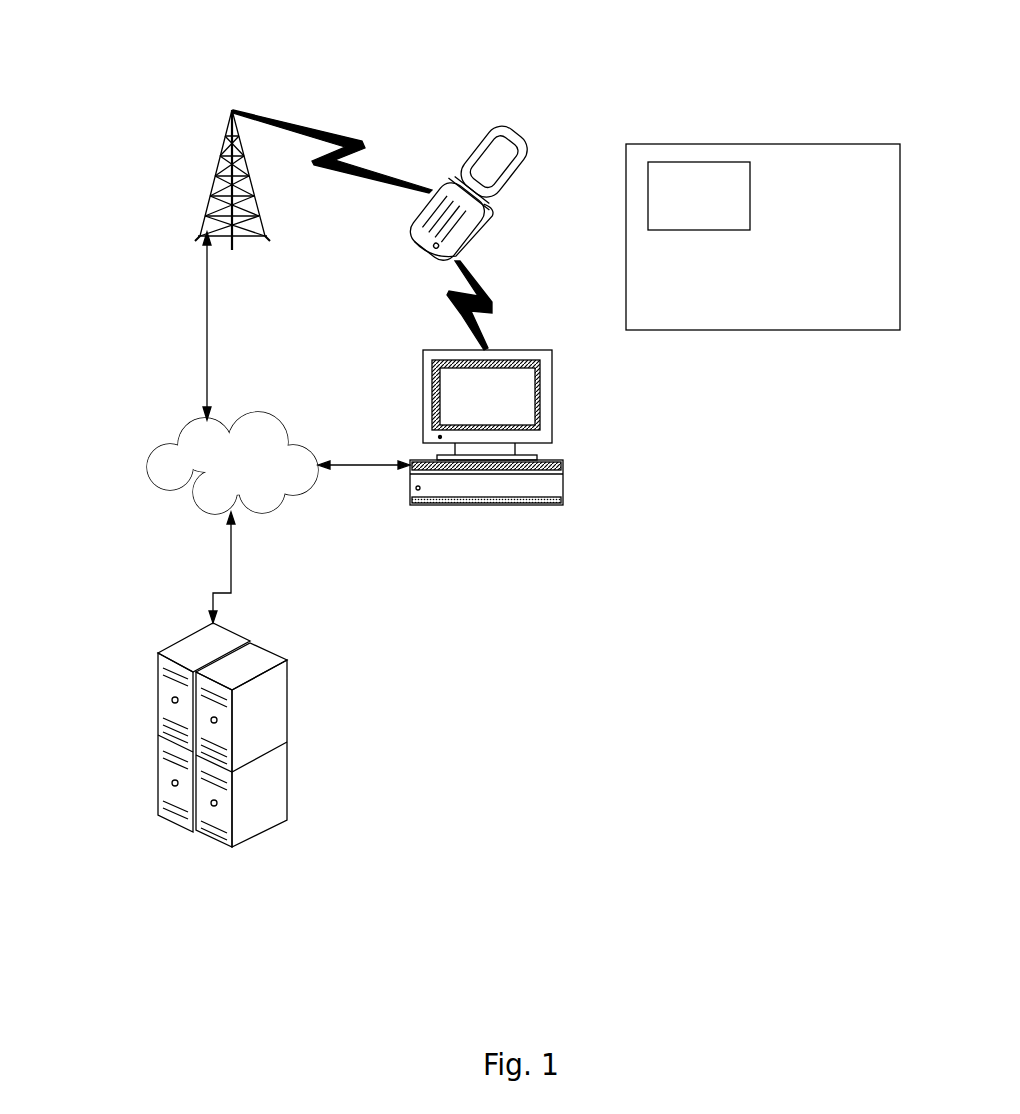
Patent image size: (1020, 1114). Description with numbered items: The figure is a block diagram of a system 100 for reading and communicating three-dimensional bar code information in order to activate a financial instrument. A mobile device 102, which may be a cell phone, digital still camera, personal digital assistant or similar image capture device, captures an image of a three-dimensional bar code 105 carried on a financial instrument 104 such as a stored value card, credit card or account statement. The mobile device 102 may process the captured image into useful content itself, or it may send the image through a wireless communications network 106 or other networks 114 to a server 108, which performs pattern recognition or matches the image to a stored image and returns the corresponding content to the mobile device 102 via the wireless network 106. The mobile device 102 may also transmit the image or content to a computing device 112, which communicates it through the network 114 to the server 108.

The system 100 is at (862, 57).
The mobile device 102 is at (503, 125).
The financial instrument 104 is at (765, 144).
The 3D bar code 105 is at (659, 163).
The wireless communications network 106 is at (215, 189).
The server 108 is at (158, 652).
The computing device 112 is at (566, 463).
The network 114 is at (150, 445).